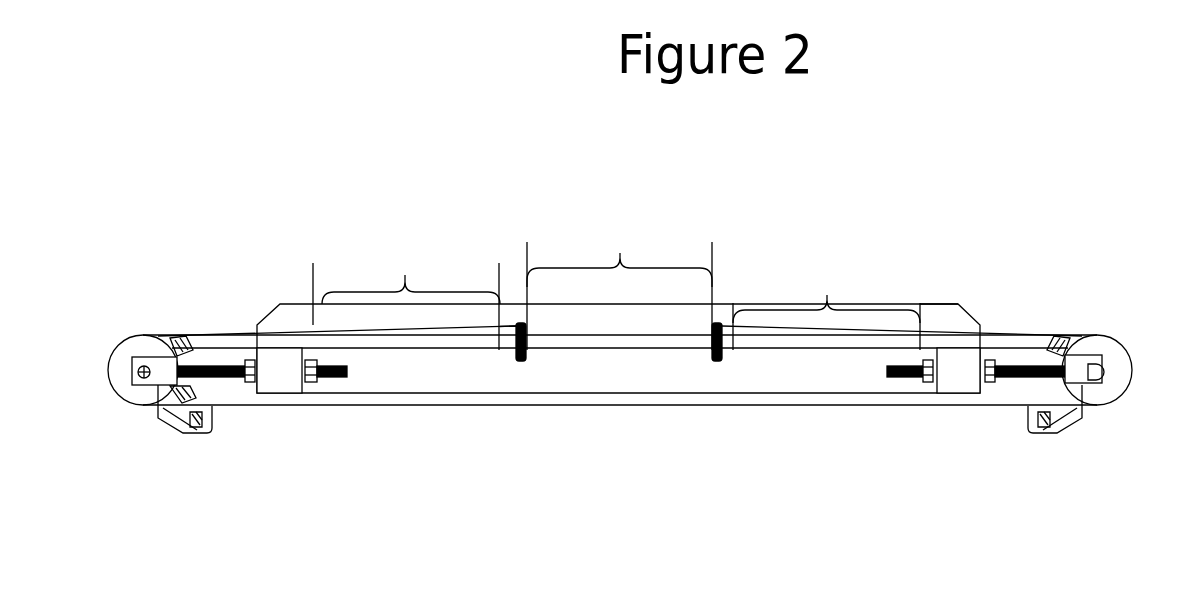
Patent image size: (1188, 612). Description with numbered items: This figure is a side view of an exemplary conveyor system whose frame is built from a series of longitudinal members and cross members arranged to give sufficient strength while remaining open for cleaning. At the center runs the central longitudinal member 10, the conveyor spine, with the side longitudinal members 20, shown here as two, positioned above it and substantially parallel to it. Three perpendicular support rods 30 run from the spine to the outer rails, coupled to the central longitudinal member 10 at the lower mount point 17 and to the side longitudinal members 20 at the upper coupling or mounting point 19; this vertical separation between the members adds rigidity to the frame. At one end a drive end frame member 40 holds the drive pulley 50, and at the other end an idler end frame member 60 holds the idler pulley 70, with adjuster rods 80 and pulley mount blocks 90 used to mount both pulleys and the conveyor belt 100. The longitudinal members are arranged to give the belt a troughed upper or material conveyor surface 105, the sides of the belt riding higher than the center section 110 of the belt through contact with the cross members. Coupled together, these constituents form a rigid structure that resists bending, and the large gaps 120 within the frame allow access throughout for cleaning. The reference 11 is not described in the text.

The central longitudinal member 10 is at (620, 441).
The tube interior 11 is at (620, 427).
The lower mount point 17 is at (594, 399).
The upper coupling or mounting point 19 is at (629, 398).
The side longitudinal member 20 is at (921, 266).
The support rod 30 is at (728, 257).
The drive end frame member 40 is at (942, 250).
The drive pulley 50 is at (1081, 275).
The idler end frame member 60 is at (257, 293).
The idler pulley 70 is at (117, 273).
The adjuster rod 80 is at (612, 441).
The pulley mount block 90 is at (611, 473).
The conveyor belt 100 is at (620, 436).
The upper or material conveyor surface 105 is at (618, 246).
The center section of the belt 110 is at (620, 226).
The gaps 120 is at (438, 290).